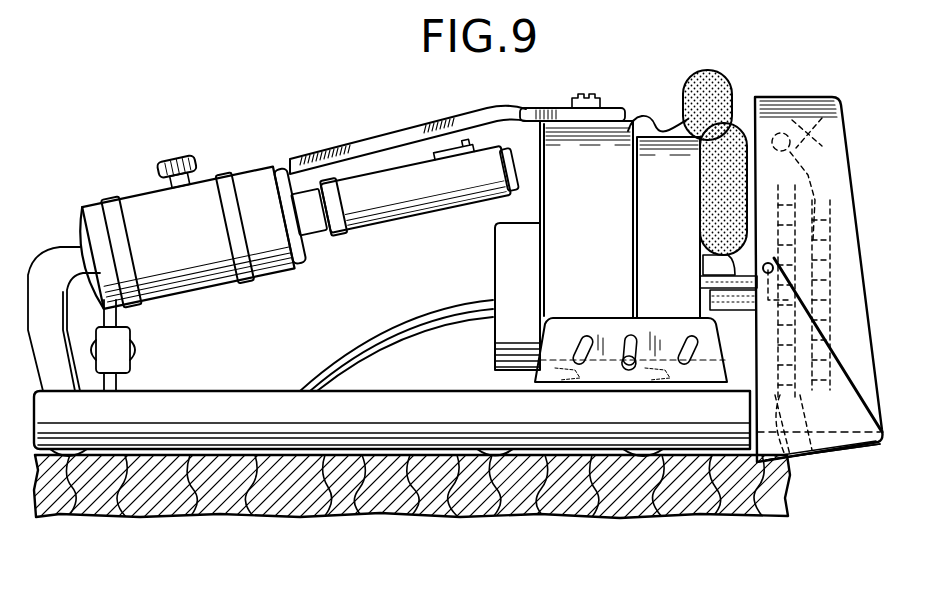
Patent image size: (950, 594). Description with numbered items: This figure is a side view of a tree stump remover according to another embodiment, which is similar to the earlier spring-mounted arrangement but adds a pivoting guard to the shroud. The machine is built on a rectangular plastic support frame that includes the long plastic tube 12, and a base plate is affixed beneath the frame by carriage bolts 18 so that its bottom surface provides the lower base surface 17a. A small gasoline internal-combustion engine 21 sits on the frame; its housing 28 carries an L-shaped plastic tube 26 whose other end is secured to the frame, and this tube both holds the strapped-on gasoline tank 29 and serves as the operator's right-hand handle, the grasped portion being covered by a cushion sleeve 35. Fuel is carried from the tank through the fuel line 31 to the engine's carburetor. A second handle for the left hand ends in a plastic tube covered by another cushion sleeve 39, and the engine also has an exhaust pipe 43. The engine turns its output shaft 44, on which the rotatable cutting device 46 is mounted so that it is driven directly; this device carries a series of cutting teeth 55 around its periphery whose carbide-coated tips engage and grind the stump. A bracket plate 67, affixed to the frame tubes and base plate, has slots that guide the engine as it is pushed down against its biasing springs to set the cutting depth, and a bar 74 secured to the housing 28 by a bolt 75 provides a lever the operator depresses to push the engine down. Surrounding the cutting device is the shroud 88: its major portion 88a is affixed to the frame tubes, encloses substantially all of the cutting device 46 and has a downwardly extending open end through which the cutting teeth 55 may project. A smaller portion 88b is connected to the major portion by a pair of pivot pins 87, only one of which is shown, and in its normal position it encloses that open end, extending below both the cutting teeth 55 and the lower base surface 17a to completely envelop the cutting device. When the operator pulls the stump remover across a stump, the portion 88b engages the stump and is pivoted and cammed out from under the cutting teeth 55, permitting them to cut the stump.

The plastic tube 12 is at (325, 428).
The bottom surface 17a is at (572, 478).
The carriage bolts 18 is at (497, 456).
The gasoline internal-combustion engine 21 is at (652, 96).
The L-shaped plastic tube 26 is at (530, 178).
The housing 28 is at (527, 140).
The gasoline tank 29 is at (212, 181).
The fuel line 31 is at (402, 337).
The cushion sleeve 35 is at (390, 213).
The cushion sleeve 39 is at (706, 69).
The exhaust pipe 43 is at (742, 128).
The output shaft 44 is at (705, 278).
The rotatable cutting device 46 is at (826, 231).
The cutting teeth 55 is at (838, 111).
The bracket plate 67 is at (588, 318).
The bar 74 is at (532, 107).
The bolt 75 is at (579, 94).
The pivot pins 87 is at (776, 252).
The shroud 88 is at (844, 275).
The major portion of shroud 88a is at (810, 96).
The smaller portion of shroud 88b is at (835, 368).